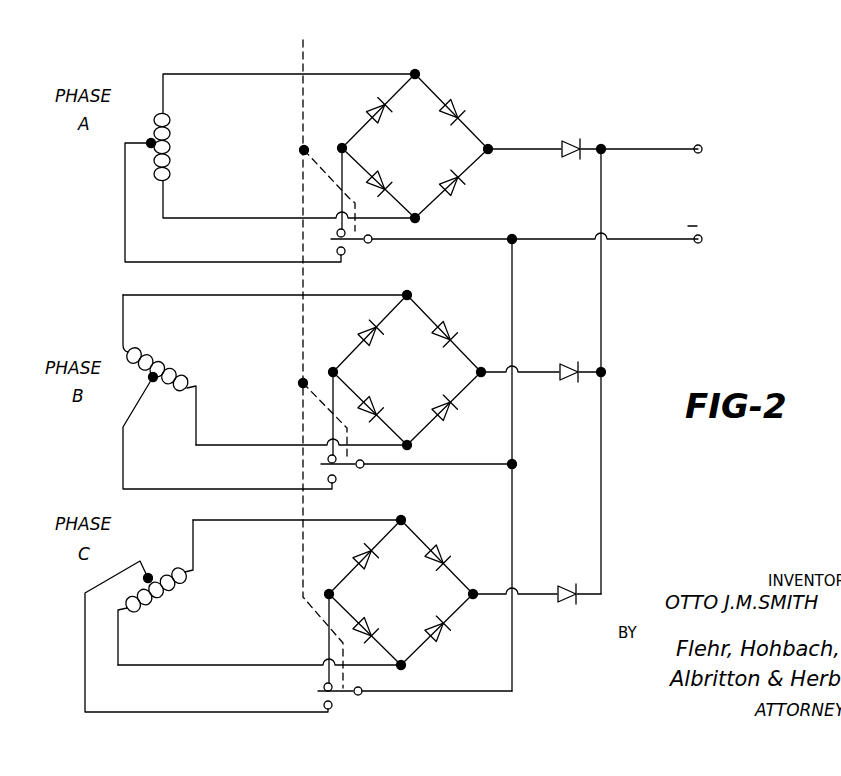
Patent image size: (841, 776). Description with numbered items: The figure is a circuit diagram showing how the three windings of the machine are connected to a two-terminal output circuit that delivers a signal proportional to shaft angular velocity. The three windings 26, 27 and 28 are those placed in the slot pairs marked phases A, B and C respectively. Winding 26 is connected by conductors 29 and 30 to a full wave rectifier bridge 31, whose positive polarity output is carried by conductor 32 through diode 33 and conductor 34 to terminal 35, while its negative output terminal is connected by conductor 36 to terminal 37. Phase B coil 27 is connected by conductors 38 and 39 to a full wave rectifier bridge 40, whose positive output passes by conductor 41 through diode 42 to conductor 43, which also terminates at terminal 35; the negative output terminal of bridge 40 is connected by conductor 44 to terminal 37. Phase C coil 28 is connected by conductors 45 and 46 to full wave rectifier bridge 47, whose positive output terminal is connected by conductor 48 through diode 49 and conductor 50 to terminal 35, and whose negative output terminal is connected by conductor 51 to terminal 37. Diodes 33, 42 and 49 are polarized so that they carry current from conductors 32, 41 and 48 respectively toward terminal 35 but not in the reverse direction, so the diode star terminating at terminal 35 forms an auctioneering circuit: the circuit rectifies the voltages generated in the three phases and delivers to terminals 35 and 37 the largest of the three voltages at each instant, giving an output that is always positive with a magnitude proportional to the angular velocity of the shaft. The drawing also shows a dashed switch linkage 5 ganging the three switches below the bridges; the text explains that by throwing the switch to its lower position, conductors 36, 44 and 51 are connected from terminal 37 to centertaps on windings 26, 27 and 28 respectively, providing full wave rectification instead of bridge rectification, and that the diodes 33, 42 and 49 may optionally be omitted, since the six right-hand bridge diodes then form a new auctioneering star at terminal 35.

The switch actuating link (dashed) 5 is at (327, 351).
The winding 26 is at (171, 130).
The phase B coil 27 is at (170, 344).
The phase C coil 28 is at (158, 602).
The conductor 29 is at (266, 71).
The conductor 30 is at (259, 217).
The full wave rectifier bridge 31 is at (366, 124).
The conductor 32 is at (508, 148).
The diode 33 is at (573, 139).
The conductor 34 is at (632, 148).
The terminal 35 is at (702, 148).
The conductor 36 is at (452, 240).
The terminal 37 is at (700, 242).
The conductor 38 is at (267, 295).
The conductor 39 is at (265, 446).
The full wave rectifier bridge 40 is at (355, 348).
The conductor 41 is at (536, 372).
The diode 42 is at (571, 360).
The conductor 43 is at (602, 318).
The conductor 44 is at (454, 466).
The conductor 45 is at (261, 520).
The conductor 46 is at (271, 664).
The full wave rectifier bridge 47 is at (350, 562).
The conductor 48 is at (493, 575).
The diode 49 is at (562, 576).
The conductor 50 is at (601, 544).
The conductor 51 is at (480, 693).